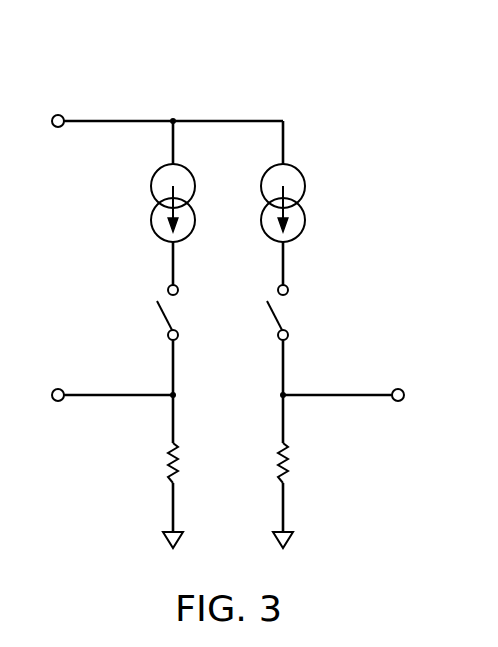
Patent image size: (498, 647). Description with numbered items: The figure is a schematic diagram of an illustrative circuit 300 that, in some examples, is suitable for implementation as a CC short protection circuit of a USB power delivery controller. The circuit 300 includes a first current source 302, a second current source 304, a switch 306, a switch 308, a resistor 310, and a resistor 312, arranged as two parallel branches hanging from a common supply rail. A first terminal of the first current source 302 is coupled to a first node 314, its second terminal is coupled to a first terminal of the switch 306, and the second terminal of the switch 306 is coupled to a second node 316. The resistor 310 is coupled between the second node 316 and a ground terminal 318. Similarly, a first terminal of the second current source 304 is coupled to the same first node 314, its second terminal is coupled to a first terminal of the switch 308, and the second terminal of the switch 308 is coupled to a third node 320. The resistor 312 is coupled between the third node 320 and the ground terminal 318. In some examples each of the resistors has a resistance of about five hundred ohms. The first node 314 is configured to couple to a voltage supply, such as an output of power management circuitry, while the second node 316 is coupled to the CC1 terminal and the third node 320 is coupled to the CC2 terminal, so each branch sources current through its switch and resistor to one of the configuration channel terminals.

The circuit 300 is at (141, 59).
The first current source 302 is at (151, 184).
The second current source 304 is at (305, 184).
The switch 306 is at (160, 320).
The switch 308 is at (270, 320).
The resistor 310 is at (169, 466).
The resistor 312 is at (287, 466).
The first node 314 is at (55, 115).
The second node 316 is at (55, 402).
The ground terminal 318 is at (170, 541).
The third node 320 is at (400, 402).